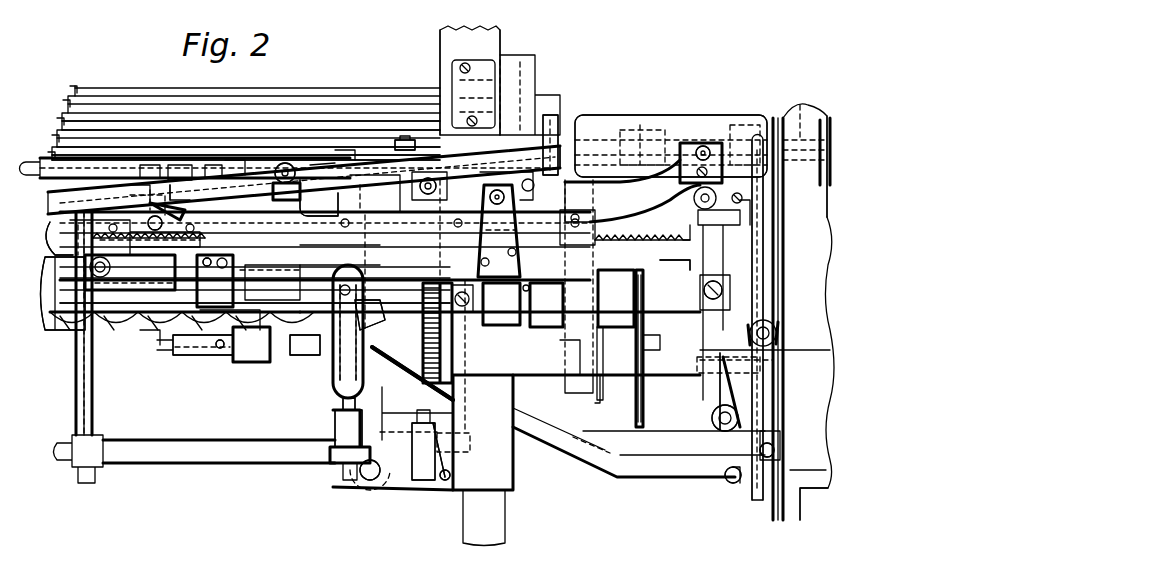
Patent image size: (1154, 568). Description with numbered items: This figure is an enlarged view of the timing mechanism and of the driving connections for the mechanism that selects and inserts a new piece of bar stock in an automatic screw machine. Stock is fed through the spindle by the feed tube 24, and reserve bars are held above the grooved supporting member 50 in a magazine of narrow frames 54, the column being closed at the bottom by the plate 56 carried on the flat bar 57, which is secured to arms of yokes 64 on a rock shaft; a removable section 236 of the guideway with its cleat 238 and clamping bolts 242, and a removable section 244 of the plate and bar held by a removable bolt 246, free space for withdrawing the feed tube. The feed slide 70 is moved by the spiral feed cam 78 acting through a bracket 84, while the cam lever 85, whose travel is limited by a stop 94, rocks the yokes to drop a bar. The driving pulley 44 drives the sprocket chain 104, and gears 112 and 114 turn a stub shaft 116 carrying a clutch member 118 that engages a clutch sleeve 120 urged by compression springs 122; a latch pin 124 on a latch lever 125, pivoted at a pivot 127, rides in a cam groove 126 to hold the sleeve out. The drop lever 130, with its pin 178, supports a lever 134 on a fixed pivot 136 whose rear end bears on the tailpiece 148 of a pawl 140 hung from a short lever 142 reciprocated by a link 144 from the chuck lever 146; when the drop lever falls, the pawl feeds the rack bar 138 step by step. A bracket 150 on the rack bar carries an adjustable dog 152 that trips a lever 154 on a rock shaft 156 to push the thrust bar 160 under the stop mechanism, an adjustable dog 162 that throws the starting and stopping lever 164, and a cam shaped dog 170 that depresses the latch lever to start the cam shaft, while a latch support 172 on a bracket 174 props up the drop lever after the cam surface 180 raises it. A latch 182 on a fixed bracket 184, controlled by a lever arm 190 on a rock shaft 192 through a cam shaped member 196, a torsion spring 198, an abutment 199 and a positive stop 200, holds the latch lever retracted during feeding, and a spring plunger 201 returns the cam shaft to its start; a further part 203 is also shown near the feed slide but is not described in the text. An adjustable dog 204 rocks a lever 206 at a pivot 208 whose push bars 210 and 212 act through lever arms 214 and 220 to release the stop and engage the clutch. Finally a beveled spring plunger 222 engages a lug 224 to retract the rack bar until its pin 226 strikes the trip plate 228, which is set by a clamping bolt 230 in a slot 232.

The feed tube 24 is at (800, 138).
The driving pulley 44 is at (580, 383).
The supporting member 50 is at (62, 163).
The narrow frames 54 is at (470, 81).
The plate 56 is at (88, 148).
The flat bar 57 is at (73, 160).
The yokes 64 is at (397, 189).
The feed slide 70 is at (82, 357).
The spiral feed cam 78 is at (173, 320).
The bracket 84 is at (190, 340).
The cam lever 85 is at (217, 211).
The stop 94 is at (200, 357).
The sprocket chain 104 is at (640, 398).
The gear 112 is at (440, 353).
The gear 114 is at (445, 318).
The stub shaft 116 is at (530, 313).
The clutch member 118 is at (372, 313).
The clutch sleeve 120 is at (440, 325).
The compression springs 122 is at (330, 203).
The latch pin 124 is at (350, 252).
The latch lever 125 is at (343, 393).
The cam groove 126 is at (367, 268).
The pivot 127 is at (400, 408).
The drop lever 130 is at (560, 112).
The lever 134 is at (323, 167).
The fixed pivot 136 is at (287, 163).
The rack bar 138 is at (655, 224).
The pawl 140 is at (180, 173).
The lever 142 is at (150, 170).
The link 144 is at (622, 200).
The chuck lever 146 is at (705, 148).
The tailpiece 148 is at (125, 185).
The bracket 150 is at (653, 310).
The adjustable dog 152 is at (673, 372).
The lever 154 is at (723, 383).
The rock shaft 156 is at (712, 418).
The thrust bar 160 is at (826, 455).
The adjustable dog 162 is at (723, 278).
The starting and stopping lever 164 is at (770, 283).
The cam shaped dog 170 is at (270, 362).
The latch support 172 is at (499, 196).
The bracket 174 is at (507, 220).
The pin 178 is at (540, 118).
The cam surface 180 is at (560, 130).
The latch 182 is at (340, 412).
The fixed bracket 184 is at (340, 385).
The lever arm 190 is at (327, 450).
The rock shaft 192 is at (213, 455).
The cam shaped member 196 is at (277, 363).
The torsion spring 198 is at (443, 447).
The abutment 199 is at (440, 480).
The positive stop 200 is at (445, 490).
The spring plunger 201 is at (153, 347).
The post 203 is at (88, 407).
The adjustable dog 204 is at (332, 363).
The lever 206 is at (372, 392).
The pivot 208 is at (370, 478).
The push bar 210 is at (633, 475).
The push bar 212 is at (570, 443).
The lever arm 214 is at (727, 462).
The lever arm 220 is at (760, 457).
The spring plunger 222 is at (237, 265).
The lug 224 is at (247, 240).
The pin 226 is at (233, 276).
The trip plate 228 is at (187, 273).
The clamping bolt 230 is at (117, 317).
The slot 232 is at (73, 257).
The removable section 236 is at (233, 160).
The cleat 238 is at (210, 170).
The clamping bolts 242 is at (177, 170).
The removable section 244 is at (343, 148).
The removable bolt 246 is at (403, 140).